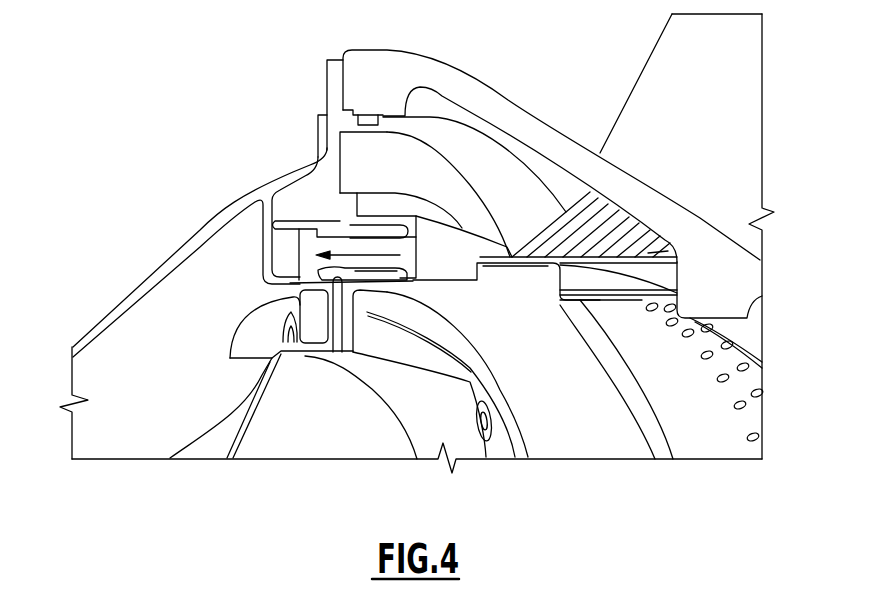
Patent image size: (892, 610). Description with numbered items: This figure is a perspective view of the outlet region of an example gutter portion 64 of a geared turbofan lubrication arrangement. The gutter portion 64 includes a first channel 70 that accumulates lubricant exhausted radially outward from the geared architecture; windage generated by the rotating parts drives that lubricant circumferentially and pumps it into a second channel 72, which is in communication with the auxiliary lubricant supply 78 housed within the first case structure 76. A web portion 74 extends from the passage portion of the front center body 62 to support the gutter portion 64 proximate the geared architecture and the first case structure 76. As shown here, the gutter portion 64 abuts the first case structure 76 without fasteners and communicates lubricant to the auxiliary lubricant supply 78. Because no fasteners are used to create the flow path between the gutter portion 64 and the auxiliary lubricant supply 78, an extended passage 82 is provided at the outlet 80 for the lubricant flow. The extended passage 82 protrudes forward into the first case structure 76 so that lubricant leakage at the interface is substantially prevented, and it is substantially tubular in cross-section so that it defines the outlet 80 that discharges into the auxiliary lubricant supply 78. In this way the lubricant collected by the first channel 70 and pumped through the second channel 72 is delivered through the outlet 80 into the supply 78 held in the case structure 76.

The front center body 62 is at (722, 148).
The gutter portion 64 is at (425, 410).
The first channel 70 is at (523, 283).
The second channel 72 is at (398, 268).
The web portion 74 is at (680, 260).
The first case structure 76 is at (283, 193).
The auxiliary lubricant supply 78 is at (174, 302).
The outlet 80 is at (377, 245).
The extended passage 82 is at (293, 286).